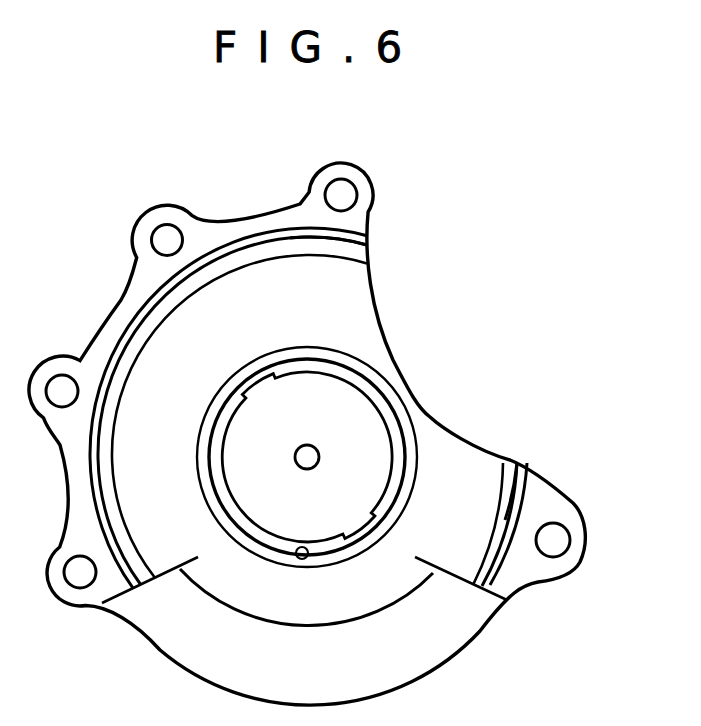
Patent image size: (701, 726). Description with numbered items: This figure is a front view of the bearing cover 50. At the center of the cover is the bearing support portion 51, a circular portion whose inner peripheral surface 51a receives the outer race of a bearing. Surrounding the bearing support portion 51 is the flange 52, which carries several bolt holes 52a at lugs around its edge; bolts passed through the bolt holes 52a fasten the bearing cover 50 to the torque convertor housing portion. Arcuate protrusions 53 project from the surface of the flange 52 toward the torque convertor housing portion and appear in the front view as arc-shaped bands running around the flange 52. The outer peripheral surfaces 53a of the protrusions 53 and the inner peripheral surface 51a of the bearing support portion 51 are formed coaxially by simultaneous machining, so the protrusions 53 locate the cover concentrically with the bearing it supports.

The bearing cover 50 is at (242, 182).
The bearing support portion 51 is at (255, 427).
The inner peripheral surface 51a is at (304, 558).
The flange 52 is at (113, 316).
The bolt holes 52a is at (353, 196).
The arcuate protrusions 53 is at (362, 256).
The outer peripheral surfaces 53a is at (293, 230).